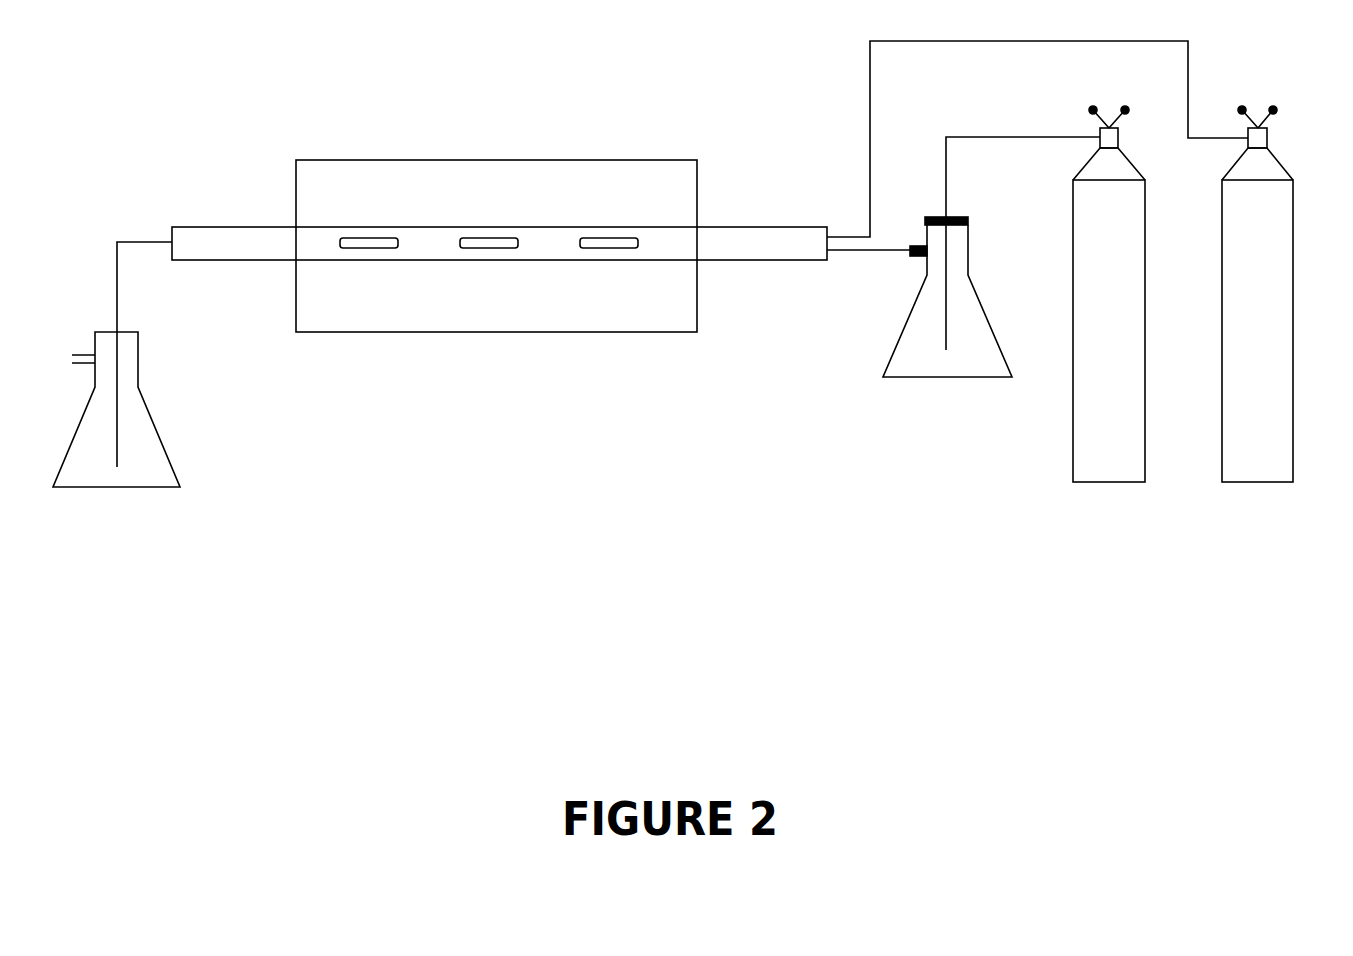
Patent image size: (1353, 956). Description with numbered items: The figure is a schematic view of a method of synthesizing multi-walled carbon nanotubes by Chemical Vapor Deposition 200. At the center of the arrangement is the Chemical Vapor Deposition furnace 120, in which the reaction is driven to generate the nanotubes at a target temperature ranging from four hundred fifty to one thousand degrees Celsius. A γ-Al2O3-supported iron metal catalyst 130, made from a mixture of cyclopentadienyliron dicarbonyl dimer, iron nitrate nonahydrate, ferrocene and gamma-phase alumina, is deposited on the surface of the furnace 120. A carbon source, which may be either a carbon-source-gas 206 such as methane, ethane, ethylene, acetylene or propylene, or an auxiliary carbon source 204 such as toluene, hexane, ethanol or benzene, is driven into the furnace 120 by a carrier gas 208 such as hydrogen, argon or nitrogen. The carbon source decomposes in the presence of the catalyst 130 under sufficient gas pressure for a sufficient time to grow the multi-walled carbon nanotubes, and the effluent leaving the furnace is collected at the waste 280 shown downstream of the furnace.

The Chemical Vapor Deposition furnace 120 is at (692, 132).
The γ-Al2O3-supported iron metal catalyst 130 is at (490, 248).
The Chemical Vapor Deposition 200 is at (697, 363).
The auxiliary carbon source 204 is at (947, 377).
The carbon-source-gas 206 is at (1109, 482).
The carrier gas 208 is at (1258, 482).
The waste 280 is at (117, 487).